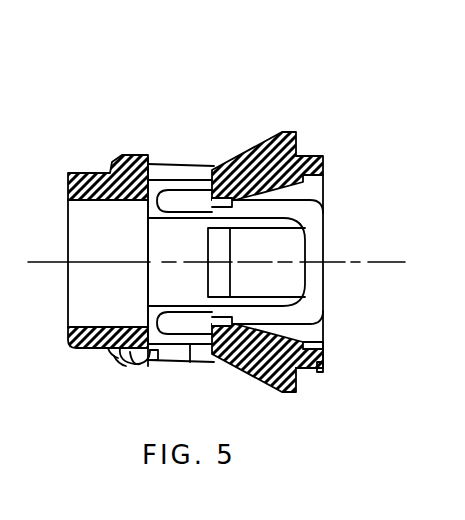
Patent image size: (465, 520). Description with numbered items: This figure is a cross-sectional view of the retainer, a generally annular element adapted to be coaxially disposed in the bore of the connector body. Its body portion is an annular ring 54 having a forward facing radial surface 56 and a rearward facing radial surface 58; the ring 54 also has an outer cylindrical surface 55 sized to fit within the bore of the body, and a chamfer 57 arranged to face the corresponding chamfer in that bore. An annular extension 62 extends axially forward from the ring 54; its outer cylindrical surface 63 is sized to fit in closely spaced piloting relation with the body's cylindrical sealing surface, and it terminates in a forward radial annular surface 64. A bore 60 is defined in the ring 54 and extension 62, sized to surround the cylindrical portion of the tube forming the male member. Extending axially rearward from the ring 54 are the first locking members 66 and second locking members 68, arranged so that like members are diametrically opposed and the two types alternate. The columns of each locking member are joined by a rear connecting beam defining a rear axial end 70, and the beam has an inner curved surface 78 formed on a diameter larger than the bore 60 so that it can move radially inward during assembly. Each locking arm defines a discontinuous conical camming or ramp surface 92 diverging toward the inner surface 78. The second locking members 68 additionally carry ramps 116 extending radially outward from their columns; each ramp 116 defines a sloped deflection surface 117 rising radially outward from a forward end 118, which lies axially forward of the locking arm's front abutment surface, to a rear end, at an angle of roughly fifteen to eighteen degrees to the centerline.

The annular ring 54 is at (121, 356).
The outer cylindrical surface 55 is at (134, 368).
The forward facing radial surface 56 is at (112, 352).
The chamfer 57 is at (118, 368).
The rearward facing radial surface 58 is at (150, 360).
The bore 60 is at (130, 233).
The annular extension 62 is at (93, 352).
The outer cylindrical surface 63 is at (113, 162).
The forward radial annular surface 64 is at (67, 338).
The first locking member 66 is at (317, 288).
The second locking member 68 is at (289, 131).
The rear axial end 70 is at (324, 373).
The inner curved surface 78 is at (322, 348).
The camming or ramp surface 92 is at (280, 247).
The ramp 116 is at (222, 380).
The deflection surface 117 is at (212, 162).
The forward end 118 is at (190, 362).